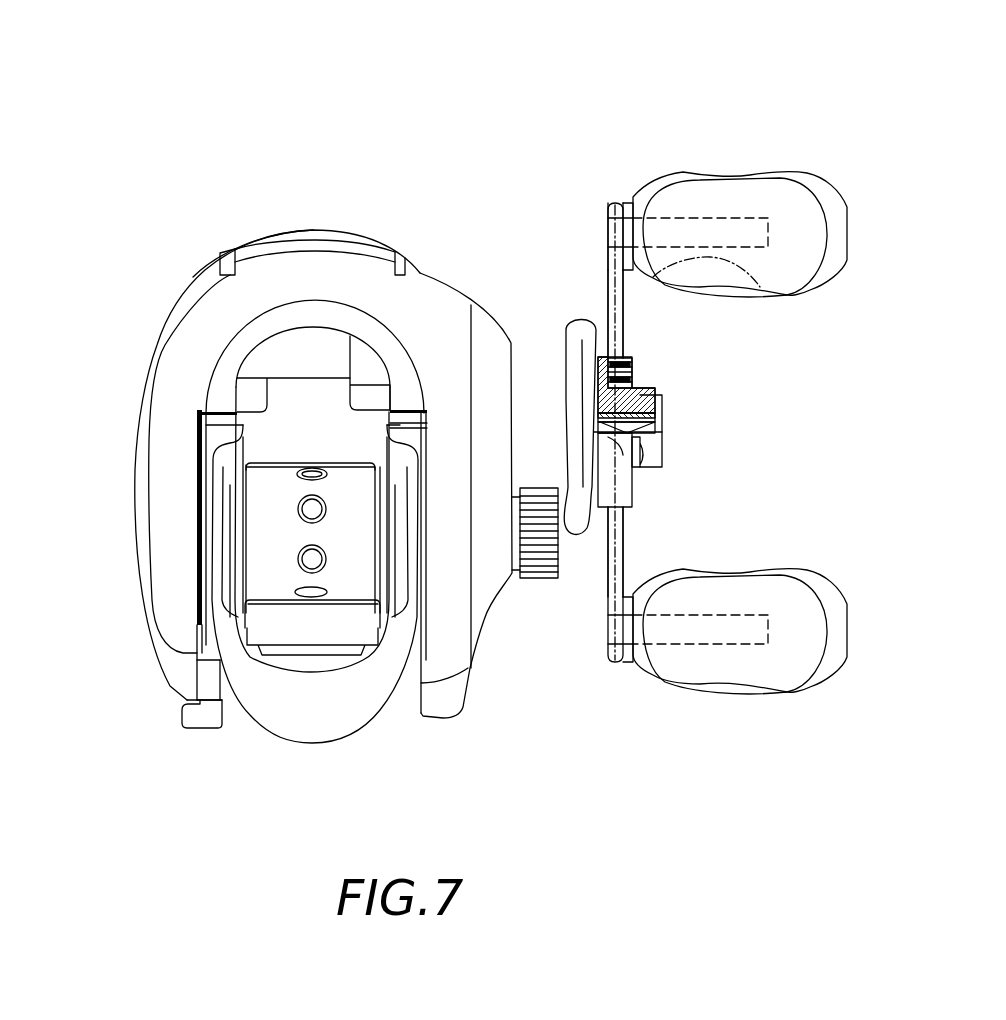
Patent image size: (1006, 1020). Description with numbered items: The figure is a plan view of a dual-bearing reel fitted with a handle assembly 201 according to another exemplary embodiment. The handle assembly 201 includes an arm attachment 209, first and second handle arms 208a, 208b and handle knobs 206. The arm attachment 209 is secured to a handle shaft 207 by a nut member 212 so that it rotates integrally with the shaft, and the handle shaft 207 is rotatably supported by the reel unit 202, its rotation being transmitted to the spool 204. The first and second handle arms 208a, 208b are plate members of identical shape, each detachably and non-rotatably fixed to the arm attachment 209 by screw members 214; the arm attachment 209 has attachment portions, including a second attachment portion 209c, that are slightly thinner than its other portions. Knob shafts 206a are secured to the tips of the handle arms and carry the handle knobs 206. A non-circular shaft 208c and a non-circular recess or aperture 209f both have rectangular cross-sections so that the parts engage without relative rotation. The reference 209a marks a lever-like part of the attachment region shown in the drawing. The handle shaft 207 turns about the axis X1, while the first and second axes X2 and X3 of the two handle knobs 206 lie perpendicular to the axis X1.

The handle assembly 201 is at (726, 426).
The reel unit 202 is at (342, 277).
The spool 204 is at (277, 480).
The handle knob 206 is at (773, 185).
The knob shaft 206a is at (683, 218).
The handle shaft 207 is at (598, 407).
The first handle arm 208a is at (623, 533).
The second handle arm 208b is at (623, 325).
The non-circular shaft 208c is at (599, 357).
The arm attachment 209 is at (638, 383).
The attachment lever 209a is at (598, 362).
The second attachment portion 209c is at (613, 495).
The non-circular recess 209f is at (658, 421).
The nut member 212 is at (655, 397).
The screw member 214 is at (632, 362).
The axis of the handle shaft X1 is at (640, 463).
The first axis X2 is at (785, 296).
The second axis X3 is at (669, 552).